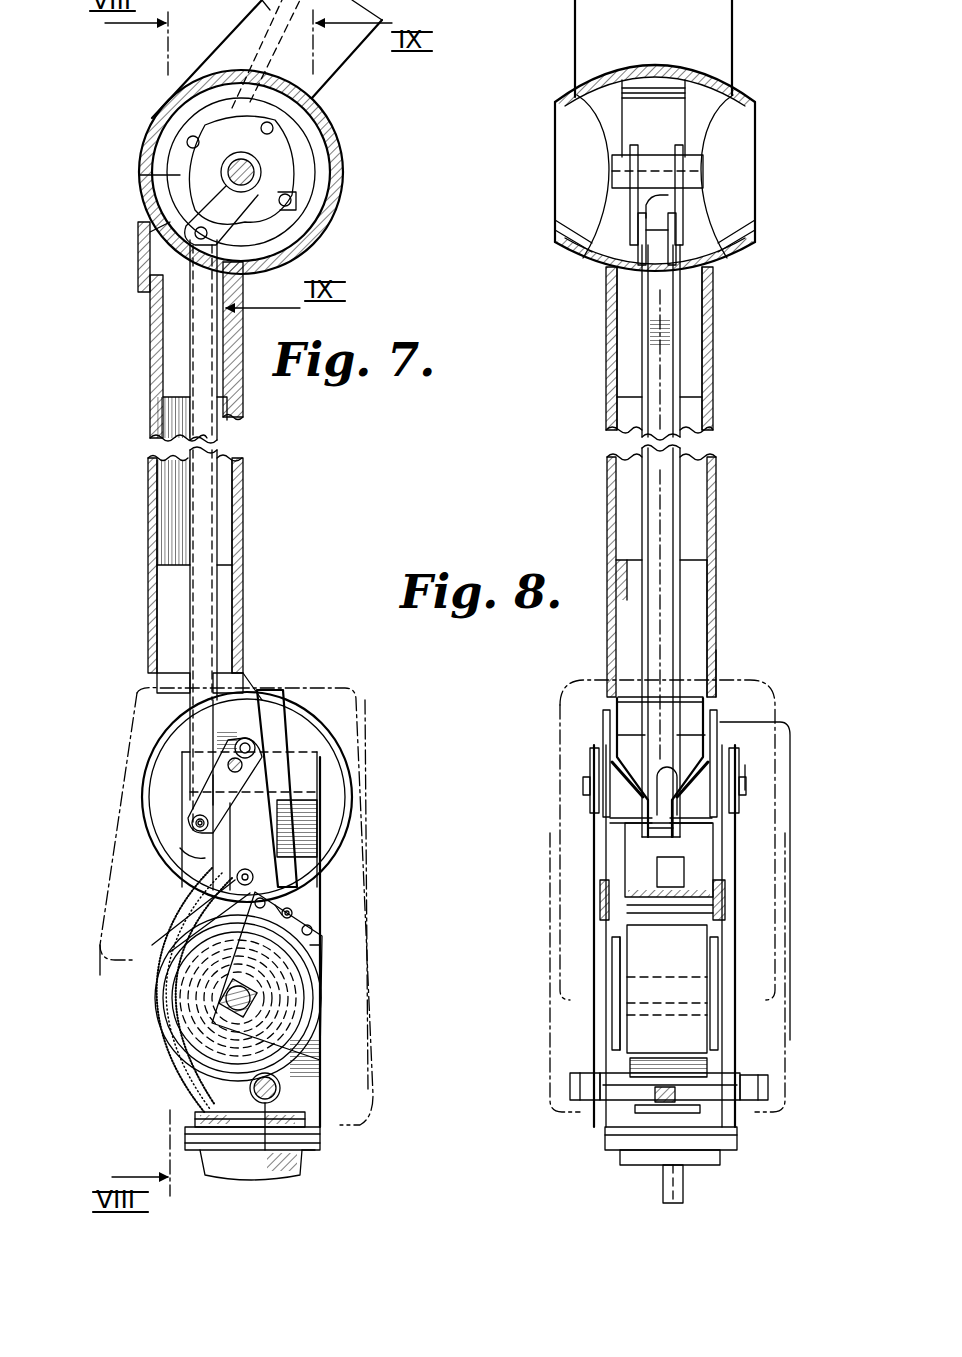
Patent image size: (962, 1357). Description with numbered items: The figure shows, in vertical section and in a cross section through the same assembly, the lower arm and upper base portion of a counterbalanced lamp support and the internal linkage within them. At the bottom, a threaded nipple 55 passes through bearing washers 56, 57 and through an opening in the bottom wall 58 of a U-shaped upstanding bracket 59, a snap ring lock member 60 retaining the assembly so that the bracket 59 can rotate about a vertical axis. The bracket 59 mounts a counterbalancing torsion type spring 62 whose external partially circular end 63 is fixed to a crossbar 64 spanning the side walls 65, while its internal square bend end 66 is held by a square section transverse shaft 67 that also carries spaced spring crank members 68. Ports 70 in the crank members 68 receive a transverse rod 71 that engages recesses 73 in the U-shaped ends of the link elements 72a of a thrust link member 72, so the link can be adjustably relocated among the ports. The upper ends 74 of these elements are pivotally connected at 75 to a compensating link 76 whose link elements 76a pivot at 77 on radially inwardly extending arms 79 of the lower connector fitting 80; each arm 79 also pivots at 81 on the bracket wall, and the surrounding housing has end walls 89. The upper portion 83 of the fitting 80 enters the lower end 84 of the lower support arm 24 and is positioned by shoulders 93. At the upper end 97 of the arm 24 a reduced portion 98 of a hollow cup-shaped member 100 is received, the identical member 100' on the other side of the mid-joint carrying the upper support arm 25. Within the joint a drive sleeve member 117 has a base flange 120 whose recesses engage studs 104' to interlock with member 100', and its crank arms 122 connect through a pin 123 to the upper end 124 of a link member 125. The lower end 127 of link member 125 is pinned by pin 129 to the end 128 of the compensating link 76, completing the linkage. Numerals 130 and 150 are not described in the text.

In FIG. 7, the lower support arm 24 is at (248, 486).
In FIG. 8, the lower support arm 24 is at (718, 490).
In FIG. 7, the upper support arm 25 is at (335, 50).
In FIG. 8, the upper support arm 25 is at (733, 12).
In FIG. 7, the threaded nipple 55 is at (215, 1118).
In FIG. 7, the bearing washer 56 is at (218, 1158).
In FIG. 7, the bearing washer 57 is at (185, 1140).
In FIG. 7, the bottom wall 58 is at (312, 1152).
In FIG. 7, the U-shaped upstanding bracket 59 is at (300, 823).
In FIG. 7, the snap ring lock member 60 is at (308, 1115).
In FIG. 7, the counterbalancing torsion type spring 62 is at (300, 1043).
In FIG. 8, the counterbalancing torsion type spring 62 is at (642, 1026).
In FIG. 7, the external partially circular end 63 is at (282, 1088).
In FIG. 8, the external partially circular end 63 is at (655, 1105).
In FIG. 7, the crossbar 64 is at (267, 1100).
In FIG. 8, the crossbar 64 is at (617, 1092).
In FIG. 8, the side walls 65 is at (600, 1058).
In FIG. 7, the internal square bend end 66 is at (282, 1016).
In FIG. 7, the square section transverse shaft 67 is at (258, 1000).
In FIG. 8, the square section transverse shaft 67 is at (628, 977).
In FIG. 7, the spring crank members 68 is at (320, 950).
In FIG. 8, the spring crank members 68 is at (605, 940).
In FIG. 7, the ports 70 is at (313, 930).
In FIG. 7, the transverse rod 71 is at (322, 882).
In FIG. 8, the transverse rod 71 is at (672, 908).
In FIG. 7, the thrust link member 72 is at (270, 852).
In FIG. 8, the link elements 72a is at (705, 870).
In FIG. 7, the recesses 73 is at (292, 912).
In FIG. 8, the recesses 73 is at (738, 910).
In FIG. 7, the upper ends 74 is at (262, 772).
In FIG. 8, the upper ends 74 is at (700, 740).
In FIG. 7, the pivotal connection 75 is at (262, 745).
In FIG. 8, the pivotal connection 75 is at (630, 742).
In FIG. 7, the compensating link 76 is at (211, 790).
In FIG. 8, the link elements 76a is at (612, 782).
In FIG. 7, the pivotal connection 77 is at (228, 762).
In FIG. 8, the pivotal connection 77 is at (748, 778).
In FIG. 7, the radially inwardly extending arms 79 is at (255, 720).
In FIG. 8, the radially inwardly extending arms 79 is at (605, 712).
In FIG. 7, the lower connector fitting 80 is at (262, 670).
In FIG. 8, the lower connector fitting 80 is at (719, 672).
In FIG. 7, the pivotal connection 81 is at (292, 785).
In FIG. 8, the pivotal connection 81 is at (585, 792).
In FIG. 8, the upper portion 83 is at (628, 560).
In FIG. 7, the lower end 84 is at (248, 595).
In FIG. 8, the lower end 84 is at (612, 566).
In FIG. 7, the end walls 89 is at (100, 930).
In FIG. 8, the shoulders 93 is at (726, 645).
In FIG. 8, the upper end 97 is at (714, 366).
In FIG. 7, the reduced portion 98 is at (158, 362).
In FIG. 8, the reduced portion 98 is at (702, 292).
In FIG. 8, the hollow cup-shaped member 100 is at (693, 168).
In FIG. 8, the hollow cup-shaped member 100' is at (549, 161).
In FIG. 7, the inwardly projecting studs 104' is at (348, 193).
In FIG. 7, the drive sleeve member 117 is at (225, 160).
In FIG. 7, the base flange 120 is at (296, 168).
In FIG. 7, the crank arms 122 is at (275, 222).
In FIG. 8, the crank arms 122 is at (633, 170).
In FIG. 8, the pin 123 is at (642, 200).
In FIG. 7, the upper end 124 is at (162, 272).
In FIG. 7, the link member 125 is at (190, 490).
In FIG. 8, the link member 125 is at (645, 360).
In FIG. 8, the lower end 127 is at (652, 842).
In FIG. 7, the end 128 is at (185, 850).
In FIG. 8, the end 128 is at (645, 832).
In FIG. 7, the pin 129 is at (190, 825).
In FIG. 8, the pin 129 is at (668, 838).
In FIG. 7, the arm mount 130 is at (268, 18).
In FIG. 7, the cable 150 is at (150, 985).
In FIG. 8, the cable 150 is at (685, 1186).